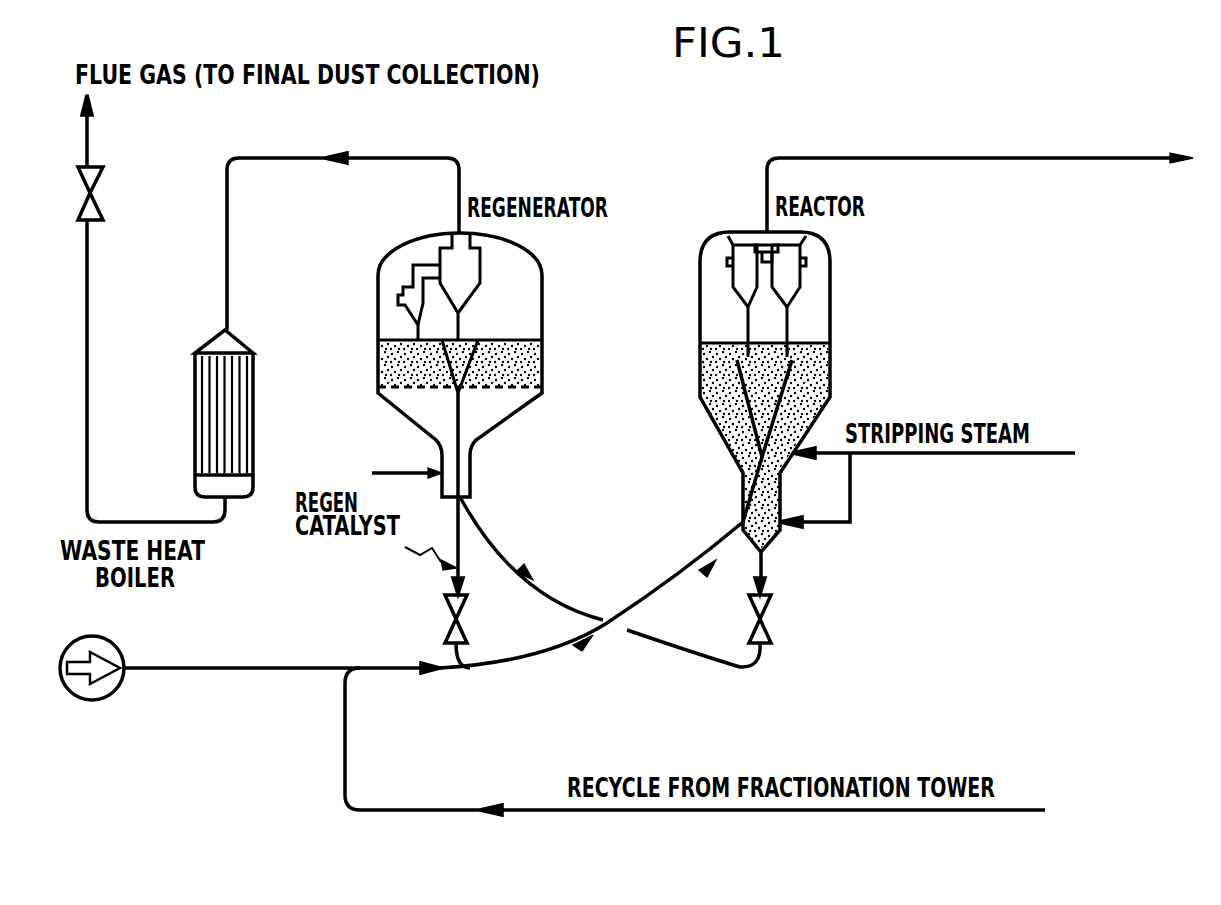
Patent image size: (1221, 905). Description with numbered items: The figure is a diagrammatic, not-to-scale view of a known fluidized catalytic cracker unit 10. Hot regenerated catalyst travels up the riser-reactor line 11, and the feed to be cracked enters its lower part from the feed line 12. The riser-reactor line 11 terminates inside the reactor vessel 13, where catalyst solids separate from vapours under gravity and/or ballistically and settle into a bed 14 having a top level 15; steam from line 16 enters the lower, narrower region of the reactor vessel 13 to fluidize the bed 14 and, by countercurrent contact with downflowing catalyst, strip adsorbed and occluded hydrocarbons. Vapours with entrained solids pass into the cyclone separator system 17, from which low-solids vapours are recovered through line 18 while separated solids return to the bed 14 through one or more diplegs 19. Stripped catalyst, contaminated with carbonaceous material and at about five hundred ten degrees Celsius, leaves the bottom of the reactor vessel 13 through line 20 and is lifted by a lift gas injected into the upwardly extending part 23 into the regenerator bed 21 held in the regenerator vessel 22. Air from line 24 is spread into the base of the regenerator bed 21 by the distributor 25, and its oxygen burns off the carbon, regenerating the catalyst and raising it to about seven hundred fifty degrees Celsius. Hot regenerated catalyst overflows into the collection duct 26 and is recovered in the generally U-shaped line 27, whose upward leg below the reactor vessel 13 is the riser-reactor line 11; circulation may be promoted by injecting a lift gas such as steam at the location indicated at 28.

The fluidized catalytic cracker unit 10 is at (286, 748).
The riser-reactor line 11 is at (698, 572).
The feed line 12 is at (202, 668).
The reactor vessel 13 is at (830, 307).
The bed 14 is at (813, 378).
The top level 15 is at (732, 343).
The line 16 is at (957, 457).
The cyclone separator system 17 is at (806, 272).
The line 18 is at (1038, 158).
The diplegs 19 is at (745, 311).
The line 20 is at (740, 650).
The regenerator bed 21 is at (522, 371).
The regenerator vessel 22 is at (532, 244).
The upwardly extending part 23 is at (480, 528).
The line 24 is at (397, 468).
The distributor 25 is at (397, 388).
The collection duct 26 is at (440, 363).
The U-shaped line 27 is at (535, 642).
The lift gas injection location 28 is at (582, 648).